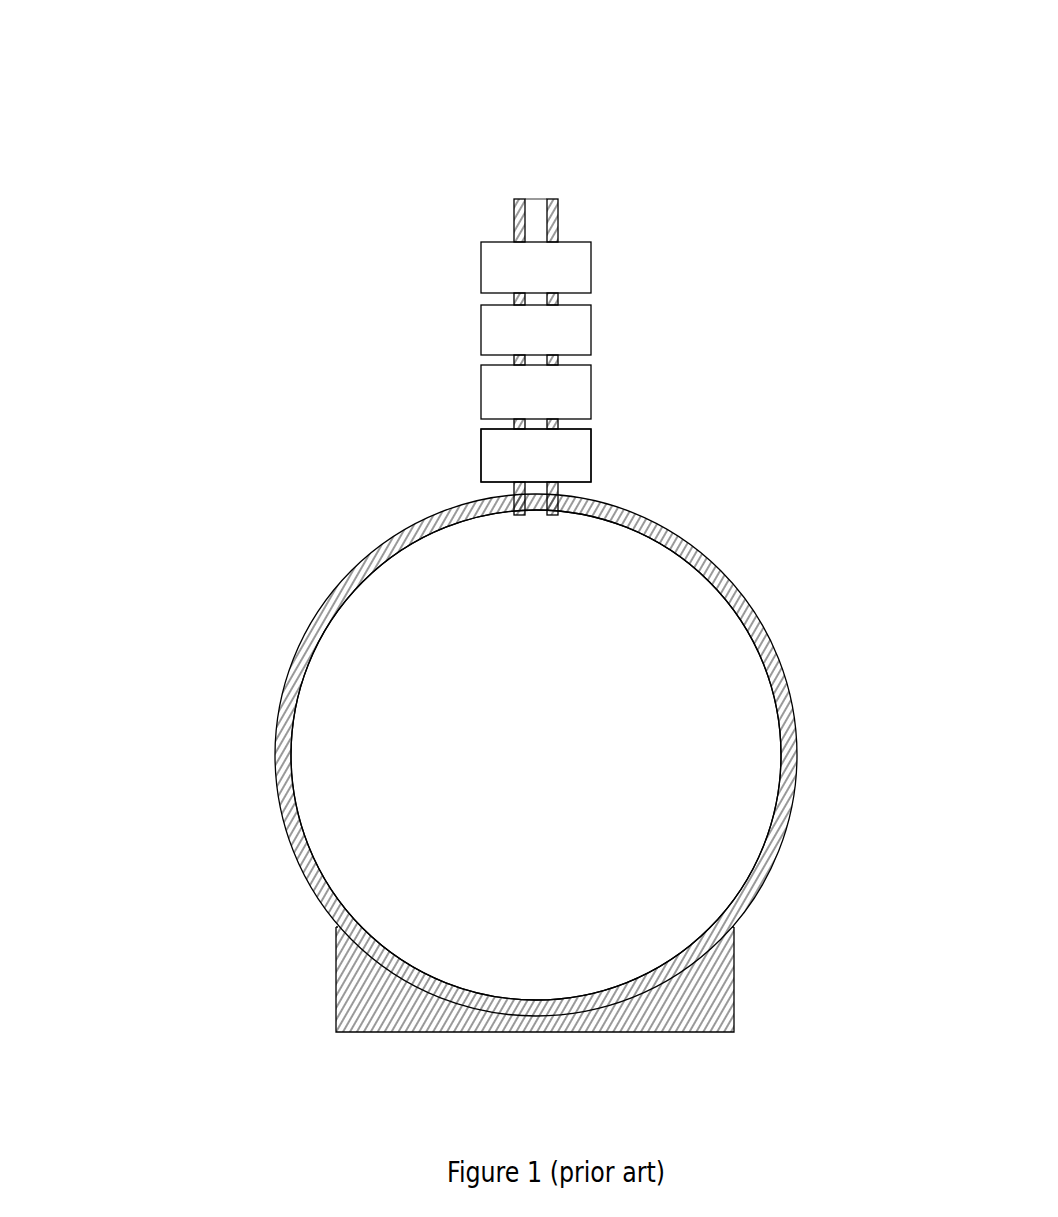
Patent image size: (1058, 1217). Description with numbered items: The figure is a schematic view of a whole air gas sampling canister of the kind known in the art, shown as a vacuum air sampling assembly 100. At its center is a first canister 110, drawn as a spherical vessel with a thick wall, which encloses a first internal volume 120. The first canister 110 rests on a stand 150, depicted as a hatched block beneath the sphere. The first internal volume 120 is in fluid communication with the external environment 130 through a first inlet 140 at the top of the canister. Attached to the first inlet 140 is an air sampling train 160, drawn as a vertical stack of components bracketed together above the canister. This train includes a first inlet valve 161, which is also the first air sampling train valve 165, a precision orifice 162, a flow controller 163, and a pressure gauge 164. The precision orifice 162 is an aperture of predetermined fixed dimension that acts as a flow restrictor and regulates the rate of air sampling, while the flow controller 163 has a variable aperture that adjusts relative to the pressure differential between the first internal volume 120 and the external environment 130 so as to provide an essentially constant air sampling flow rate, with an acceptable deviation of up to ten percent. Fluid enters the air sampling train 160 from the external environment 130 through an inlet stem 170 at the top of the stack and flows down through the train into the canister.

The vacuum air sampling assembly 100 is at (184, 96).
The first canister 110 is at (310, 623).
The first internal volume 120 is at (730, 802).
The external environment 130 is at (388, 83).
The first inlet 140 is at (537, 500).
The stand 150 is at (733, 998).
The air sampling train 160 is at (443, 238).
The first inlet valve 161 is at (568, 400).
The precision orifice 162 is at (568, 262).
The flow controller 163 is at (568, 333).
The pressure gauge 164 is at (570, 463).
The first air sampling train valve 165 is at (707, 477).
The inlet stem 170 is at (535, 199).